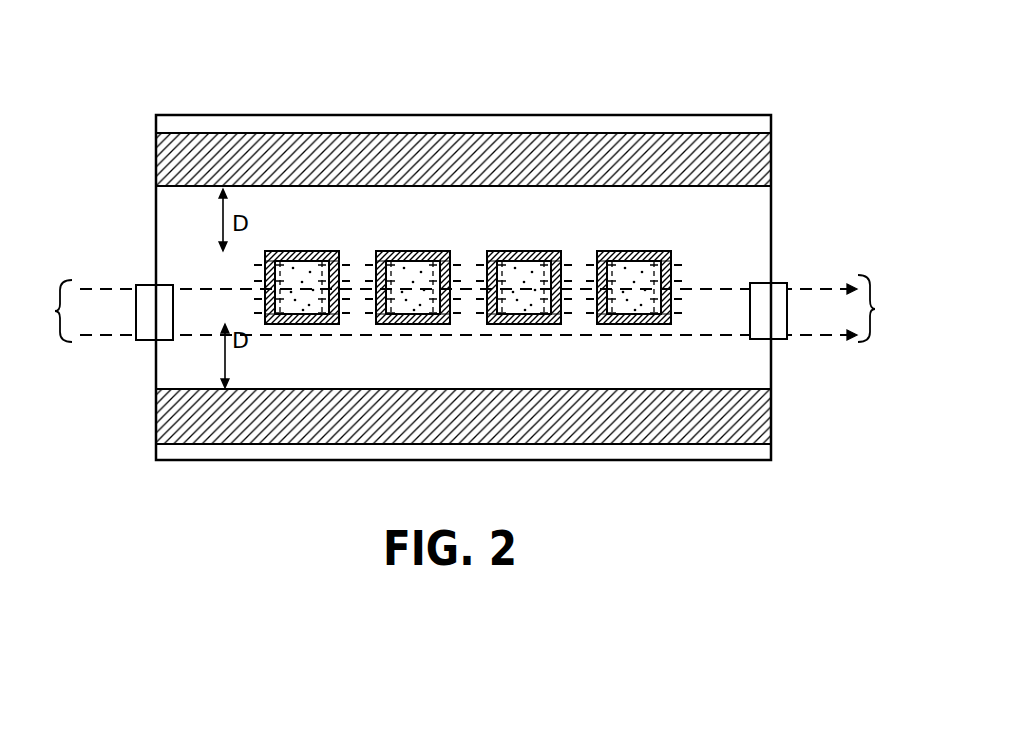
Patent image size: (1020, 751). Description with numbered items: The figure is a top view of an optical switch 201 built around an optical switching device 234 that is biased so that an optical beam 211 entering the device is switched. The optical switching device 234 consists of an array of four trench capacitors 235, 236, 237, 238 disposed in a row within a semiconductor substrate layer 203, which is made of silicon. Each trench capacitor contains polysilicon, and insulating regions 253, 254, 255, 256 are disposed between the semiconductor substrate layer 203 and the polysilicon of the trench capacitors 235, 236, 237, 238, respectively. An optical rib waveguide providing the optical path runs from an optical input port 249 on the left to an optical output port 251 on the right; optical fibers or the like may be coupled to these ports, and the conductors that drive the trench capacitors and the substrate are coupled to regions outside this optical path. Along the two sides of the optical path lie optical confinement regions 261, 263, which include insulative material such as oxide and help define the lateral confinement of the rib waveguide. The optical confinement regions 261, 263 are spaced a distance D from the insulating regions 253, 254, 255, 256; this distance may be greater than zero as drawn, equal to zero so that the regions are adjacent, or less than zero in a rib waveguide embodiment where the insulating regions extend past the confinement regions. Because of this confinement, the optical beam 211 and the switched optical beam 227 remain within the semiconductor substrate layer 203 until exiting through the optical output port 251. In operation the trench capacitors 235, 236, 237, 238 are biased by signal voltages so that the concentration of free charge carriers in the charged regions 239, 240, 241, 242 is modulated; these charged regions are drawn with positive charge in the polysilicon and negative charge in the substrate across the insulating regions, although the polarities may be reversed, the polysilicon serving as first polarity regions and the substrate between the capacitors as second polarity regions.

The optical switch 201 is at (674, 84).
The semiconductor substrate layer 203 is at (772, 220).
The optical beam 211 is at (433, 311).
The switched optical beam 227 is at (881, 308).
The optical switching device 234 is at (670, 244).
The trench capacitor 235 is at (300, 251).
The trench capacitor 236 is at (411, 251).
The trench capacitor 237 is at (522, 251).
The trench capacitor 238 is at (632, 251).
The charged region 239 is at (259, 326).
The charged region 240 is at (370, 326).
The charged region 241 is at (481, 326).
The charged region 242 is at (591, 326).
The optical input port 249 is at (146, 284).
The optical output port 251 is at (777, 282).
The insulating region 253 is at (311, 251).
The insulating region 254 is at (422, 251).
The insulating region 255 is at (533, 251).
The insulating region 256 is at (643, 251).
The optical confinement region 261 is at (772, 165).
The optical confinement region 263 is at (772, 421).